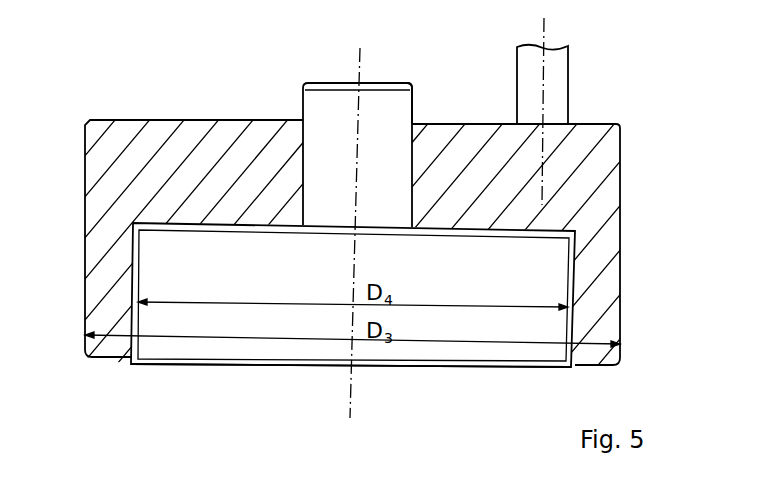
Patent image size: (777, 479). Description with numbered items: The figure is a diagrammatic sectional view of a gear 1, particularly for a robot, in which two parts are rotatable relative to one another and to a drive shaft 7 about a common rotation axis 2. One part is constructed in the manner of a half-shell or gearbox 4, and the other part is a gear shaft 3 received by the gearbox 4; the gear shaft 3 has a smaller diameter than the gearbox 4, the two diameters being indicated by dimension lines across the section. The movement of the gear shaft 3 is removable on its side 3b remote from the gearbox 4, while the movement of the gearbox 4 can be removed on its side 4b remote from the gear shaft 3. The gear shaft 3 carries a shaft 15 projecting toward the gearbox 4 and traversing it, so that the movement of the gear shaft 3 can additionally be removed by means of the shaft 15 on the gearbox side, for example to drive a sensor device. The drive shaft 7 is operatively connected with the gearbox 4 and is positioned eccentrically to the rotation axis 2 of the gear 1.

The gear 1 is at (243, 76).
The rotation axis 2 is at (362, 68).
The gear shaft 3 is at (615, 178).
The side of part 3 remote from part 4 3b is at (122, 118).
The gearbox 4 is at (545, 298).
The side of part 4 remote from part 3 4b is at (157, 365).
The drive shaft 7 is at (560, 80).
The shaft 15 is at (403, 105).